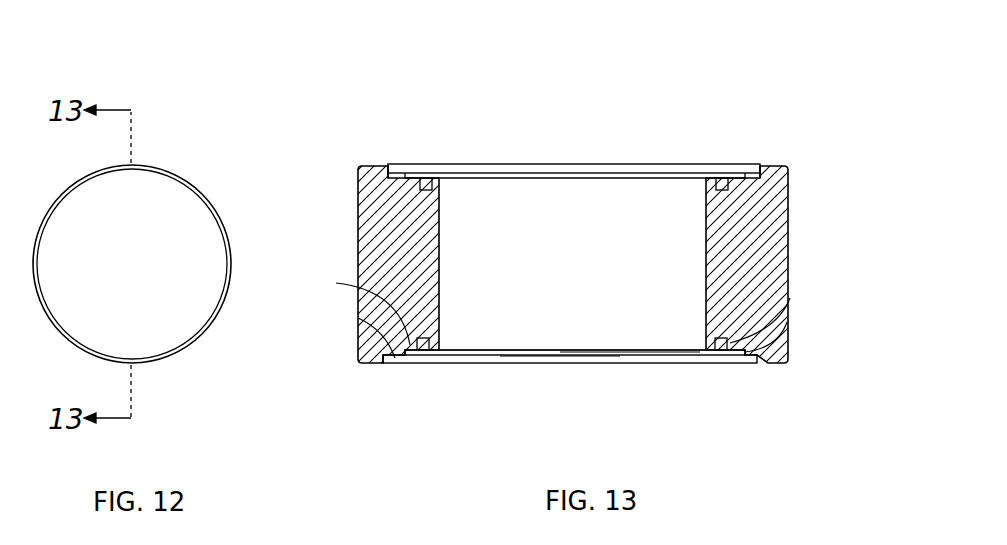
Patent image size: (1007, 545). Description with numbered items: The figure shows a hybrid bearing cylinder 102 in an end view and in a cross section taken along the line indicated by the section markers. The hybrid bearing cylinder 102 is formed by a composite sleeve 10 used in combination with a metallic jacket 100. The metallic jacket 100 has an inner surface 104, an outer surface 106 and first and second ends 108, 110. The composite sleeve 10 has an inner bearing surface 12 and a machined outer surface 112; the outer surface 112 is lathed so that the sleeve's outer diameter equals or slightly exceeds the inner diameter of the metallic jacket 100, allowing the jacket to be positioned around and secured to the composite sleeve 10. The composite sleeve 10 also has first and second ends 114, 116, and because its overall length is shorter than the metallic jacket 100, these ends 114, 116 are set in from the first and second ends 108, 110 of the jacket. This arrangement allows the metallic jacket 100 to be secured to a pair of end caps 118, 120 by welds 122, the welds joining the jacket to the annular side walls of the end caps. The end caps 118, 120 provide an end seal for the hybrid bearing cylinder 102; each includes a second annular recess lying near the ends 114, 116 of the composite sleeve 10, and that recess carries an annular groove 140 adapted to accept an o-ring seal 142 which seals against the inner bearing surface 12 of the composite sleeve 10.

In FIG. 13, the composite sleeve 10 is at (558, 177).
In FIG. 13, the inner bearing surface 12 is at (691, 306).
In FIG. 13, the metallic jacket 100 is at (474, 171).
In FIG. 13, the hybrid bearing cylinder 102 is at (416, 78).
In FIG. 13, the inner surface 104 is at (628, 338).
In FIG. 13, the outer surface 106 is at (398, 368).
In FIG. 13, the first end 108 is at (762, 165).
In FIG. 13, the second end 110 is at (390, 168).
In FIG. 13, the machined outer surface 112 is at (560, 357).
In FIG. 13, the first end 114 is at (787, 322).
In FIG. 13, the second end 116 is at (353, 314).
In FIG. 12, the end cap 118 is at (168, 190).
In FIG. 13, the end cap 118 is at (782, 168).
In FIG. 13, the end cap 120 is at (368, 220).
In FIG. 13, the welds 122 is at (387, 168).
In FIG. 13, the annular groove 140 is at (790, 298).
In FIG. 13, the o-ring seal 142 is at (722, 178).